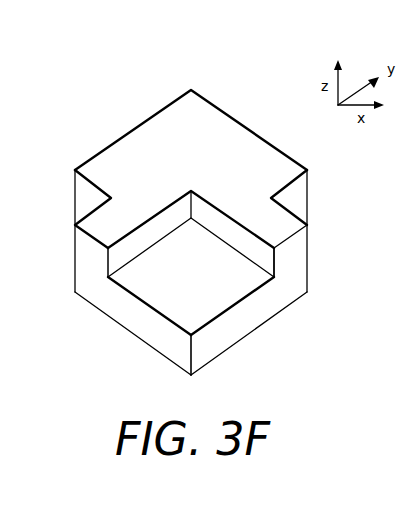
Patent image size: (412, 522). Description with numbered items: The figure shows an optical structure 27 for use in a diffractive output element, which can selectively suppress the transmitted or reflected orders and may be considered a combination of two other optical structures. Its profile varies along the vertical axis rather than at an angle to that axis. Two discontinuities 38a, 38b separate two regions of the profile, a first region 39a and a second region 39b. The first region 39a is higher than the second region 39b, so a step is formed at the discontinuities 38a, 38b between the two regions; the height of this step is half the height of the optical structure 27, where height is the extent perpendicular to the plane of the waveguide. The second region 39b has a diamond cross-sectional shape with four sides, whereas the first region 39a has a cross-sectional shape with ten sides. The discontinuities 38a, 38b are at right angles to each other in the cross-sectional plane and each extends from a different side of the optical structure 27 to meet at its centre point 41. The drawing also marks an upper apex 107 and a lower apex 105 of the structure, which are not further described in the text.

The top apex 107 is at (191, 89).
The first region 39a is at (163, 116).
The optical structure 27 is at (220, 110).
The centre point 41 is at (191, 191).
The discontinuity 38a is at (140, 242).
The discontinuity 38b is at (243, 242).
The second region 39b is at (162, 292).
The bottom apex 105 is at (192, 336).